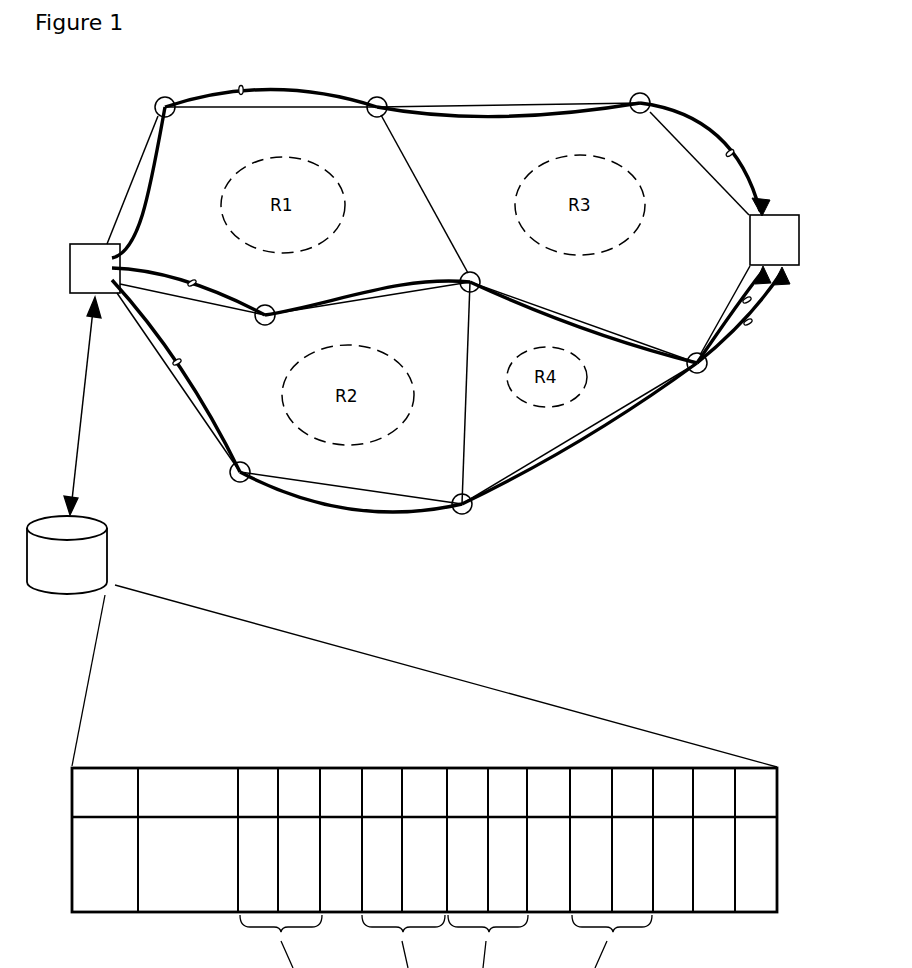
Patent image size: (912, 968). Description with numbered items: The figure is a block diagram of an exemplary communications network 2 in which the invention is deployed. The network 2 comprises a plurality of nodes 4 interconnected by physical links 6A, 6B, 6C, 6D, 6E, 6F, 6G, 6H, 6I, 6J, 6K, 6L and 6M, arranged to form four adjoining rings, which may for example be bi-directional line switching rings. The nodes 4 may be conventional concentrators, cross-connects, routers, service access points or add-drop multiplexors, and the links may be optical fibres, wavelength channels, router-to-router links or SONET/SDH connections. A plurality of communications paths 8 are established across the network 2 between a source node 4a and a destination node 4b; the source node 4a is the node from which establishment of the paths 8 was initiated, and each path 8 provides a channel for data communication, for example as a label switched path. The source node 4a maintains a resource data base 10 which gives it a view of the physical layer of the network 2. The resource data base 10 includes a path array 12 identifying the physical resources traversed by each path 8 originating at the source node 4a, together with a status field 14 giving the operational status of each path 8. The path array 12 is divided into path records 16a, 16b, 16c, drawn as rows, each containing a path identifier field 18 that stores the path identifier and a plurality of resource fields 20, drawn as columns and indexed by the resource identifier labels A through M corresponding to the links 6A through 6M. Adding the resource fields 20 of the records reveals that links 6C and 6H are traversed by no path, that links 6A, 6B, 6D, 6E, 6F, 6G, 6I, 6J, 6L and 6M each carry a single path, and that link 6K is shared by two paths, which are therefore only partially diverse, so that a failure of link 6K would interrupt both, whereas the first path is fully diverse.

The network 2 is at (735, 70).
The node 4 is at (158, 98).
The source node 4a is at (78, 243).
The destination node 4b is at (800, 253).
The physical link 6A is at (127, 180).
The physical link 6B is at (271, 118).
The physical link 6C is at (424, 194).
The physical link 6D is at (367, 302).
The physical link 6E is at (192, 308).
The physical link 6F is at (178, 382).
The physical link 6G is at (351, 488).
The physical link 6H is at (453, 393).
The physical link 6I is at (508, 96).
The physical link 6J is at (699, 163).
The physical link 6K is at (725, 310).
The physical link 6L is at (583, 322).
The physical link 6M is at (579, 433).
The communications path 8 is at (241, 87).
The resource data base 10 is at (102, 560).
The path array 12 is at (783, 753).
The status field 14 is at (205, 776).
The path record 16a is at (782, 833).
The path record 16b is at (782, 863).
The path record 16c is at (782, 893).
The path identifier field 18 is at (105, 776).
The resource field 20 is at (578, 772).